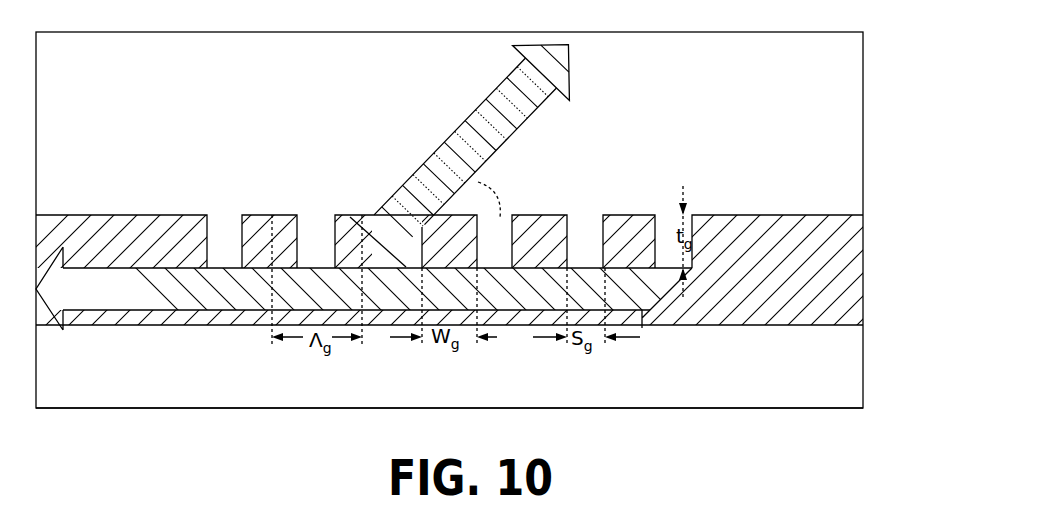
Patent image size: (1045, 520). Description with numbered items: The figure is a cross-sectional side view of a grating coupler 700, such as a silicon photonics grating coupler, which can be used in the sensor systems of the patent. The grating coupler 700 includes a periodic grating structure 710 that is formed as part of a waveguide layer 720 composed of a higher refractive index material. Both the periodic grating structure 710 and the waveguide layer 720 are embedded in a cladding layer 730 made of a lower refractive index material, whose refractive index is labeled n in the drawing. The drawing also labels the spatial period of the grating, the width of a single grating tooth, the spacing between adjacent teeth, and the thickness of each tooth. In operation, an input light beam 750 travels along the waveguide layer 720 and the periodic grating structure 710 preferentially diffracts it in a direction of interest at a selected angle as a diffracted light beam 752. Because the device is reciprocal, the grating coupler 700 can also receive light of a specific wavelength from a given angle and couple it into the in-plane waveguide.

The grating coupler 700 is at (905, 234).
The periodic grating structure 710 is at (378, 264).
The waveguide layer 720 is at (84, 230).
The cladding layer 730 is at (722, 380).
The input light beam 750 is at (175, 312).
The diffracted light beam 752 is at (476, 110).